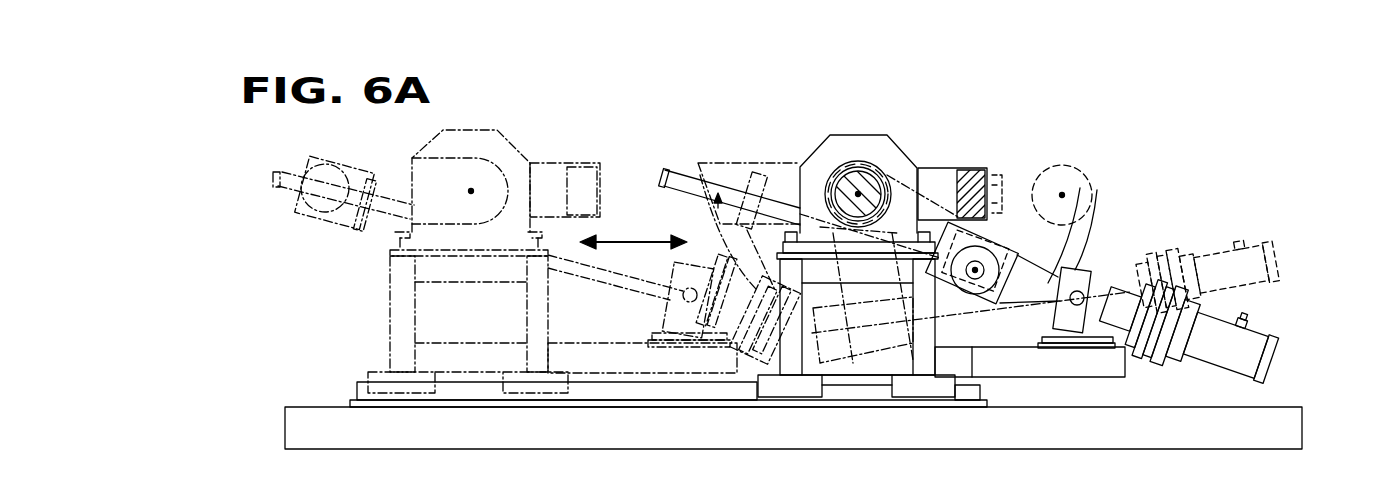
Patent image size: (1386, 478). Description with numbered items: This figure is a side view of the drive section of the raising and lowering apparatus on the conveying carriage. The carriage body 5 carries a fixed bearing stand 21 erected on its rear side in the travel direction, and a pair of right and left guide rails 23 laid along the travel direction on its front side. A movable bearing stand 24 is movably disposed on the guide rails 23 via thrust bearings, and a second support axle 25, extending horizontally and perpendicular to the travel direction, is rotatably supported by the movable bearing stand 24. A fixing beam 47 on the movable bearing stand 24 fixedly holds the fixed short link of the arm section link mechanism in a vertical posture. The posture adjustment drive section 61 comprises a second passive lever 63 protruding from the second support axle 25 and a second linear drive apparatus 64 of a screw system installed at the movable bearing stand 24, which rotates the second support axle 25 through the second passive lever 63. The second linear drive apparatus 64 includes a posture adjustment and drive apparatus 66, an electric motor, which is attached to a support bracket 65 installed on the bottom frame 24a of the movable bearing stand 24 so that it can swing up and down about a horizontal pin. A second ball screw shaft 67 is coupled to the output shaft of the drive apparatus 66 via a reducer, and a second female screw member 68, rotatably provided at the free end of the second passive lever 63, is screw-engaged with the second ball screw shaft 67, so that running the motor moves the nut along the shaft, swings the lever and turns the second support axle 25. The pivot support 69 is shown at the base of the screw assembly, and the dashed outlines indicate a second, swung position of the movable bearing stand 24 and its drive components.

The carriage body 5 is at (1296, 406).
The fixed bearing stand 21 is at (1063, 168).
The guide rails 23 is at (608, 393).
The movable bearing stand 24 is at (524, 140).
The bottom frame 24a is at (1050, 373).
The second support axle 25 is at (858, 178).
The fixing beam 47 is at (968, 178).
The posture adjustment drive section 61 is at (1176, 222).
The second passive lever 63 is at (1003, 210).
The second linear drive apparatus 64 is at (1224, 239).
The support bracket 65 is at (1107, 280).
The posture adjustment and drive apparatus 66 is at (1240, 351).
The second ball screw shaft 67 is at (1090, 192).
The second female screw member 68 is at (1006, 268).
The pivot 69 is at (1093, 264).